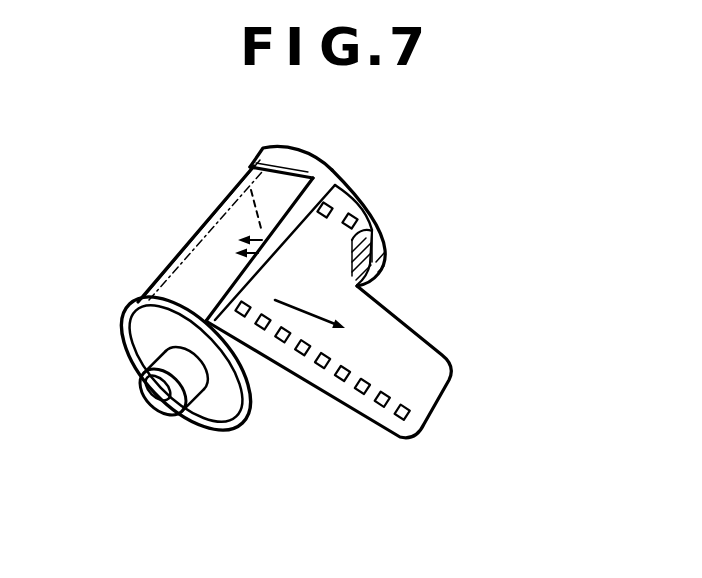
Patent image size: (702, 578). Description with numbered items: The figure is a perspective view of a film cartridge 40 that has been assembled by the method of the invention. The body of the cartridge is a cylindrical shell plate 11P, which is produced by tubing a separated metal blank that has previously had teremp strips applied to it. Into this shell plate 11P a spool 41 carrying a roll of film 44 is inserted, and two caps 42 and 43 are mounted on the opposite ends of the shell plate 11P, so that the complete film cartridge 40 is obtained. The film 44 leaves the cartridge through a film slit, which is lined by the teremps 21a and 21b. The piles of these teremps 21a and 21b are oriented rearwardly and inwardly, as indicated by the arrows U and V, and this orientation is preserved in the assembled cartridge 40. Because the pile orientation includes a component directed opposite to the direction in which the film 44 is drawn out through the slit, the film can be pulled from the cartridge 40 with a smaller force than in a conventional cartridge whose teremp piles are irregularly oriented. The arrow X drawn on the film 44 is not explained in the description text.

The film cartridge 40 is at (408, 283).
The cylindrical shell plate 11P is at (214, 210).
The cap 43 is at (295, 156).
The teremp 21b is at (325, 172).
The teremp 21a is at (365, 198).
The roll of film 44 is at (340, 394).
The cap 42 is at (118, 328).
The spool 41 is at (171, 418).
The arrow V is at (232, 172).
The arrow U is at (268, 272).
The direction X is at (321, 324).